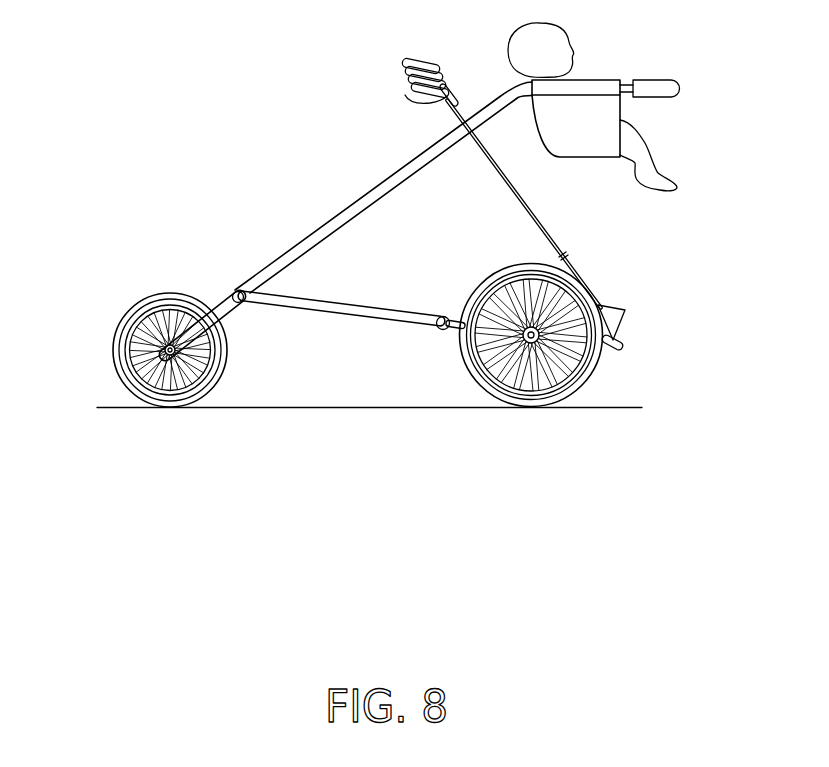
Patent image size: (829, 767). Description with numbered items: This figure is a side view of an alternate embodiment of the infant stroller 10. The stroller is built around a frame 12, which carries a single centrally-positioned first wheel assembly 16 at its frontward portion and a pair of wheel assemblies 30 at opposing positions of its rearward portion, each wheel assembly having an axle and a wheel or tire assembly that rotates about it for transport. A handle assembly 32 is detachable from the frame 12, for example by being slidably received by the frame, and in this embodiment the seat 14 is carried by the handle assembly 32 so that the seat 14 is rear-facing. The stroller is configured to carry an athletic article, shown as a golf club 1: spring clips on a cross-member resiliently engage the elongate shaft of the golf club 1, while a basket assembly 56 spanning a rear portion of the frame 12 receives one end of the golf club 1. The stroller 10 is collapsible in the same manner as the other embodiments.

The infant stroller 10 is at (394, 266).
The golf club 1 is at (413, 103).
The frame 12 is at (365, 325).
The seat 14 is at (590, 160).
The first wheel assembly 16 is at (133, 308).
The wheel assemblies 30 is at (560, 403).
The handle assembly 32 is at (662, 82).
The basket assembly 56 is at (623, 322).